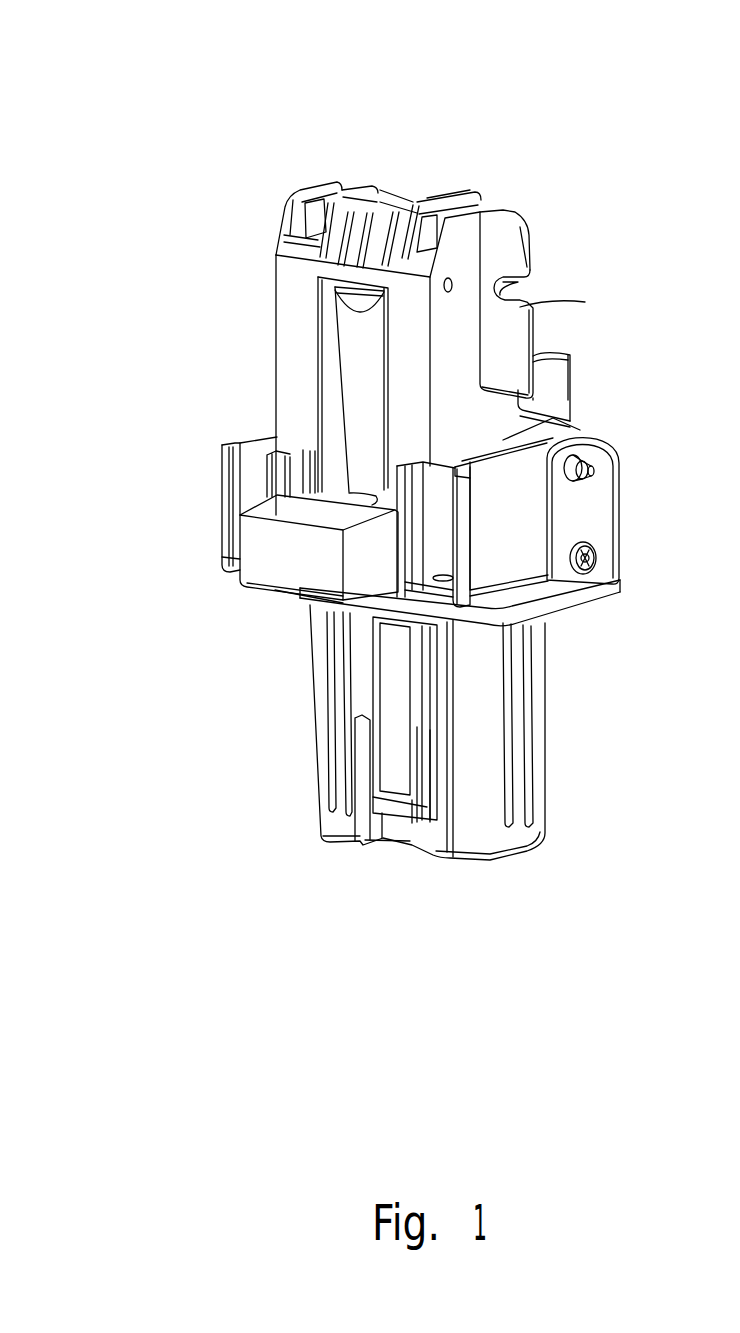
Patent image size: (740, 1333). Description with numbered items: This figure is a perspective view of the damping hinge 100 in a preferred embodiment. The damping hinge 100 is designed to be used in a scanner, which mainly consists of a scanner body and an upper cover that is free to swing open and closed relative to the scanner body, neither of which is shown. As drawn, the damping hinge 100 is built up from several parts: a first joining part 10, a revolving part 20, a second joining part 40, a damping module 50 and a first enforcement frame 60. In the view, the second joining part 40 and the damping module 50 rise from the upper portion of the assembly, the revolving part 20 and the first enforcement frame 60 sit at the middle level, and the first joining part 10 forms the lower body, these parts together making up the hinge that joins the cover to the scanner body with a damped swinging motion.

The damping hinge 100 is at (63, 40).
The first joining part 10 is at (470, 742).
The revolving part 20 is at (292, 547).
The second joining part 40 is at (455, 322).
The damping module 50 is at (353, 340).
The first enforcement frame 60 is at (582, 508).